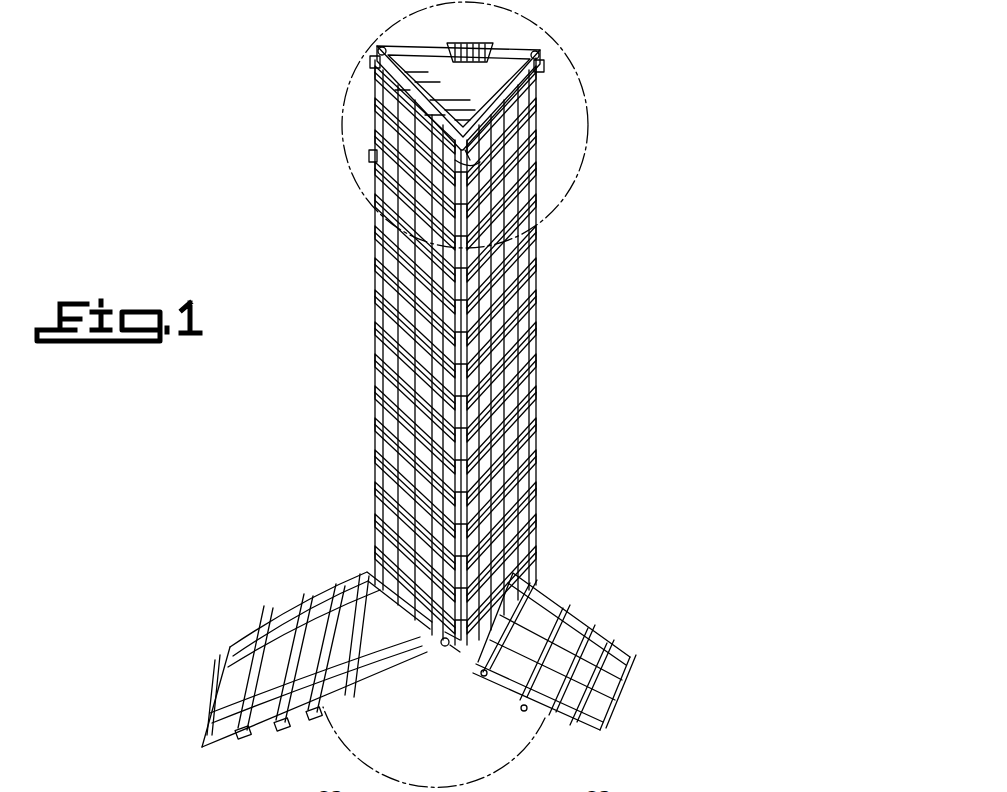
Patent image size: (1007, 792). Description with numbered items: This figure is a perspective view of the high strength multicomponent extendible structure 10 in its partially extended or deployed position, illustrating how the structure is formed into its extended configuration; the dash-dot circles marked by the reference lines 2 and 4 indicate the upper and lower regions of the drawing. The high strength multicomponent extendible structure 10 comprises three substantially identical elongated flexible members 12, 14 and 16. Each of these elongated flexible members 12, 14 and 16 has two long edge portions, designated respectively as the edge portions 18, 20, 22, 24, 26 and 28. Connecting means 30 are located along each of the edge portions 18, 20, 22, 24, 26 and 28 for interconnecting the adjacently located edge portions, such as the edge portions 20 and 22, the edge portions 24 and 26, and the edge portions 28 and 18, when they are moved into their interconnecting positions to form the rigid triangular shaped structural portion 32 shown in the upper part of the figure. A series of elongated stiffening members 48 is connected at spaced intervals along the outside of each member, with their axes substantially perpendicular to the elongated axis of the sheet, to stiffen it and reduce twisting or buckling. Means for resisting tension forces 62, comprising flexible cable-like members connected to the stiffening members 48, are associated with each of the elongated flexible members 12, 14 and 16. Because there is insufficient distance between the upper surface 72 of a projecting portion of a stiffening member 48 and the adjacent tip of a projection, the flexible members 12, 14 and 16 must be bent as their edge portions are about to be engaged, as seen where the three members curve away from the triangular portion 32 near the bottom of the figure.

The upper assembly detail 2 is at (582, 97).
The lower assembly detail 4 is at (488, 777).
The high strength multicomponent extendible structure 10 is at (545, 278).
The elongated flexible member 12 is at (540, 280).
The elongated flexible member 14 is at (375, 393).
The elongated flexible member 16 is at (472, 48).
The edge portion 18 is at (553, 613).
The edge portion 20 is at (513, 693).
The edge portion 22 is at (305, 722).
The edge portion 24 is at (280, 597).
The edge portion 26 is at (378, 162).
The edge portion 28 is at (543, 153).
The connecting means 30 is at (543, 90).
The rigid triangular shaped structural portion 32 is at (545, 325).
The stiffening member 48 is at (373, 372).
The means for resisting tension forces 62 is at (230, 648).
The upper surface 72 is at (370, 697).